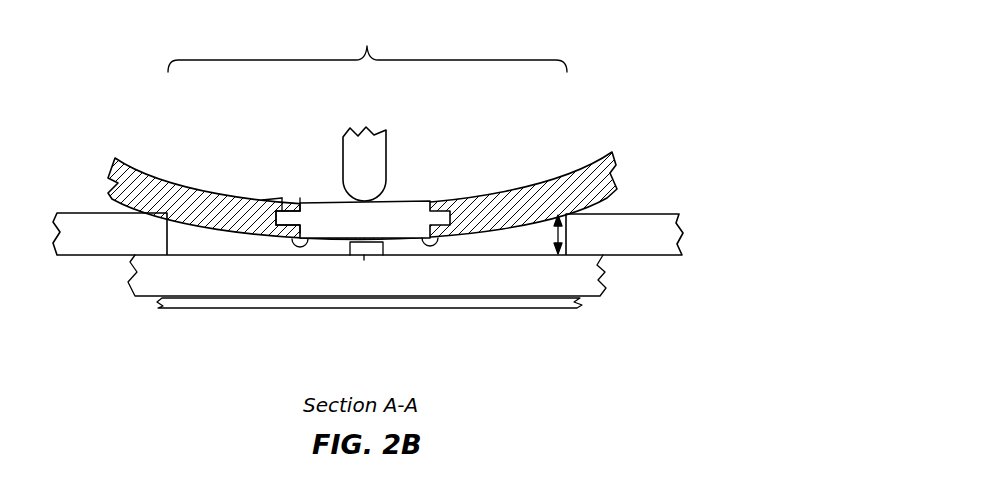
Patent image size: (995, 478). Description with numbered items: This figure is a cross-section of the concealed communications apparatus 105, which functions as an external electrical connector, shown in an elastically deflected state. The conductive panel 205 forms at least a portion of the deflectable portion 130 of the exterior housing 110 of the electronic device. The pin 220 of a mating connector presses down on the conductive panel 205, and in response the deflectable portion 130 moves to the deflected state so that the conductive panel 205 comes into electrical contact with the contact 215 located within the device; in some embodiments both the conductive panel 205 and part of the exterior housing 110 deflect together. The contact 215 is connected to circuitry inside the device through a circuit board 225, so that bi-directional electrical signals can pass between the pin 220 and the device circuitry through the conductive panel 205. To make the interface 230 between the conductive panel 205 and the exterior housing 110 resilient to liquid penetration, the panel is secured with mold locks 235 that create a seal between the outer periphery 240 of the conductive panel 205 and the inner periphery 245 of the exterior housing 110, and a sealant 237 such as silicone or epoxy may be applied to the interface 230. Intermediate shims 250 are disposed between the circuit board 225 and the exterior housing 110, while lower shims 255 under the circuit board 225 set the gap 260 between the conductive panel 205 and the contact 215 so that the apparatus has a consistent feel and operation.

The concealed communications apparatus 105 is at (625, 86).
The exterior housing 110 is at (592, 180).
The deflectable portion 130 is at (367, 46).
The conductive panel 205 is at (397, 213).
The contact 215 is at (364, 252).
The pin 220 is at (372, 146).
The circuit board 225 is at (573, 275).
The interface 230 is at (300, 197).
The mold locks 235 is at (282, 207).
The sealant 237 is at (293, 233).
The outer periphery 240 is at (284, 216).
The inner periphery 245 is at (268, 213).
The intermediate shims 250 is at (655, 230).
The lower shims 255 is at (548, 309).
The gap 260 is at (553, 242).